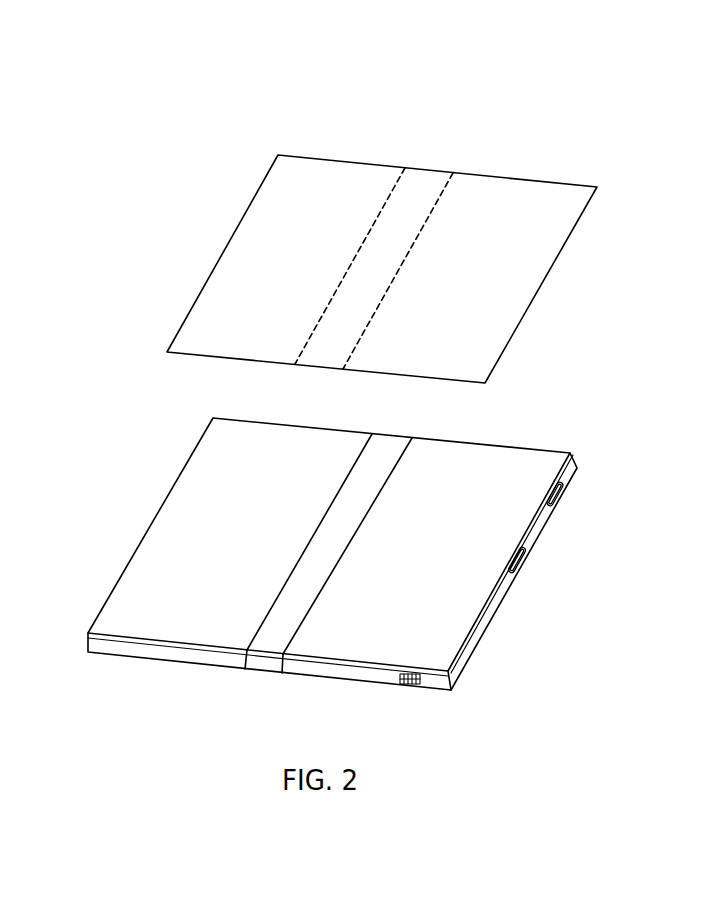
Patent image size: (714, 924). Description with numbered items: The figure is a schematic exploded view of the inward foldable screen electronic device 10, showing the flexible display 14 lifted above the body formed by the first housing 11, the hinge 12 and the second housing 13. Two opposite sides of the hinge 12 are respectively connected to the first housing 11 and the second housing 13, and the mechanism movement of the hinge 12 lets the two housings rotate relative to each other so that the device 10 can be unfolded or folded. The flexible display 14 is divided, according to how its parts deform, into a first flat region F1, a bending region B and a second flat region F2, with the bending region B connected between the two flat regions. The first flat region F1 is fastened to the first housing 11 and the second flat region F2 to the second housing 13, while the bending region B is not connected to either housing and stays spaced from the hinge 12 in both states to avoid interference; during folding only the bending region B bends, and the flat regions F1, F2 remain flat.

The inward foldable screen electronic device 10 is at (58, 26).
The first housing 11 is at (370, 655).
The hinge 12 is at (272, 643).
The second housing 13 is at (208, 643).
The flexible display 14 is at (347, 88).
The first flat region F1 is at (517, 190).
The second flat region F2 is at (343, 170).
The bending region B is at (436, 178).